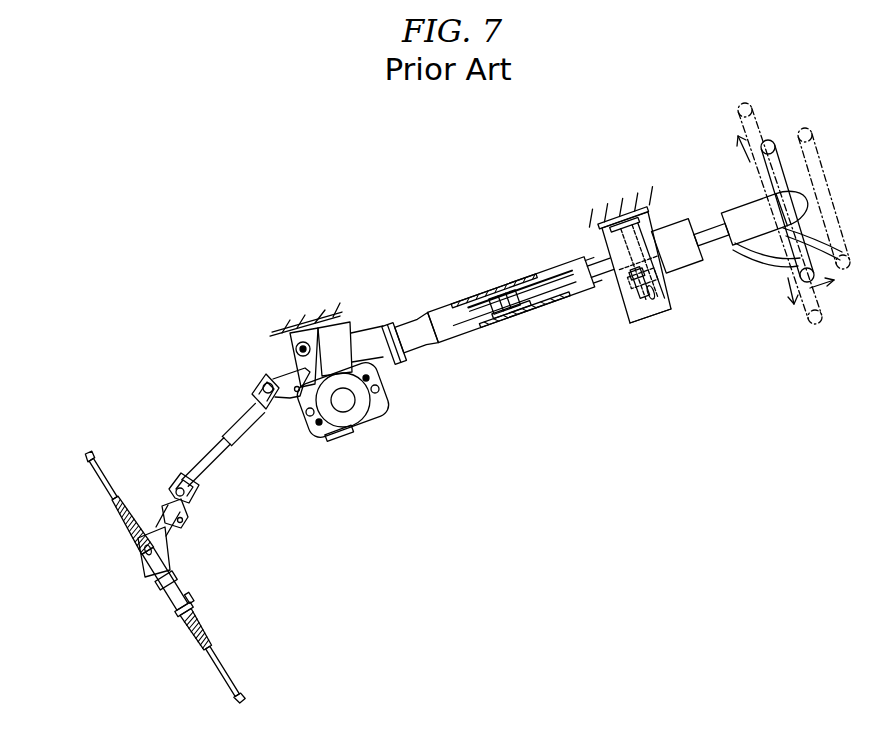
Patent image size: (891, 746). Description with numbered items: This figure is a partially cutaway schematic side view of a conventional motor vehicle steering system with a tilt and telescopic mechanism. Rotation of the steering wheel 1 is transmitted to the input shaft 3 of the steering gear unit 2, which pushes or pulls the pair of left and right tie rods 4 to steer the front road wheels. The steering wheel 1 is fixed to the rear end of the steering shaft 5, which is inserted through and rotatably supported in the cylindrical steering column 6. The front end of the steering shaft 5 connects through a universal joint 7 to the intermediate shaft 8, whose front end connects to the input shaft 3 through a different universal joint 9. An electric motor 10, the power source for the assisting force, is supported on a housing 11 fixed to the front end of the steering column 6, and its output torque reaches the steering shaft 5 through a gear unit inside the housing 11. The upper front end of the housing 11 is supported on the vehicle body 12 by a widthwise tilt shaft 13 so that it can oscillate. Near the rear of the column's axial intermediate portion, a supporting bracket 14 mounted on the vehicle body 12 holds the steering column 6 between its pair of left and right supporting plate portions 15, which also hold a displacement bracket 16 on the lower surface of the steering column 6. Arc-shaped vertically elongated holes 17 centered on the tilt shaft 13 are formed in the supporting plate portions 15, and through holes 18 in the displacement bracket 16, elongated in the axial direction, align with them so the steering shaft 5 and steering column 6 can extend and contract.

The steering wheel 1 is at (780, 162).
The steering gear unit 2 is at (148, 560).
The input shaft 3 is at (157, 517).
The tie rods 4 is at (95, 482).
The steering shaft 5 is at (712, 232).
The steering column 6 is at (685, 258).
The universal joint 7 is at (268, 378).
The intermediate shaft 8 is at (253, 420).
The universal joint 9 is at (184, 475).
The electric motor 10 is at (345, 404).
The housing 11 is at (346, 362).
The vehicle body 12 is at (615, 207).
The tilt shaft 13 is at (298, 332).
The supporting bracket 14 is at (627, 252).
The supporting plate portions 15 is at (628, 312).
The displacement bracket 16 is at (663, 290).
The vertically elongated holes 17 is at (636, 318).
The through holes 18 is at (618, 297).